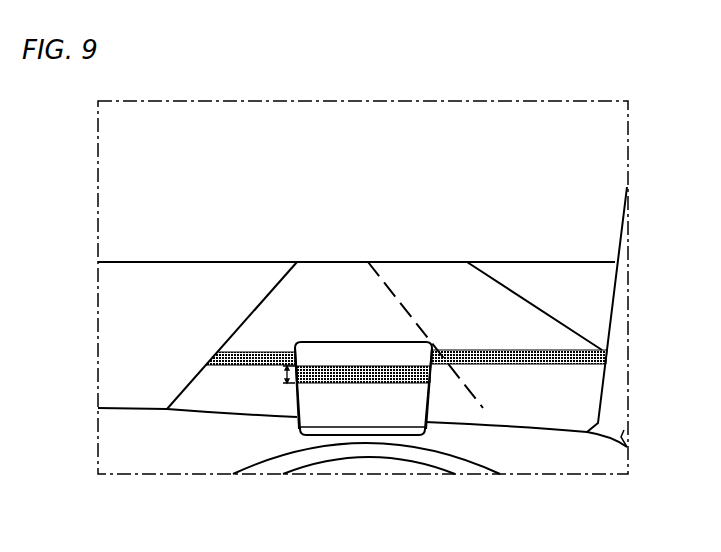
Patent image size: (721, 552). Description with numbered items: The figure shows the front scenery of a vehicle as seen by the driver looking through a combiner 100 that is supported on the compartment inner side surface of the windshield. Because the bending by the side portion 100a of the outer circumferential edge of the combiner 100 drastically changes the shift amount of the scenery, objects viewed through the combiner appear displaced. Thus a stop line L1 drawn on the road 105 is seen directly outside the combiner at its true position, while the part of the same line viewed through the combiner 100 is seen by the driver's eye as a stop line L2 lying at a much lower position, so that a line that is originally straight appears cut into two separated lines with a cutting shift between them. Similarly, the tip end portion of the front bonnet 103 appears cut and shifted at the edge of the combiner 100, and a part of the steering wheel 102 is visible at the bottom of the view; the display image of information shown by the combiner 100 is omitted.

The combiner 100 is at (350, 342).
The side portion 100a is at (296, 395).
The steering wheel 102 is at (312, 457).
The front bonnet 103 is at (560, 458).
The road 105 is at (523, 313).
The stop line L1 is at (567, 352).
The stop line L2 is at (375, 385).